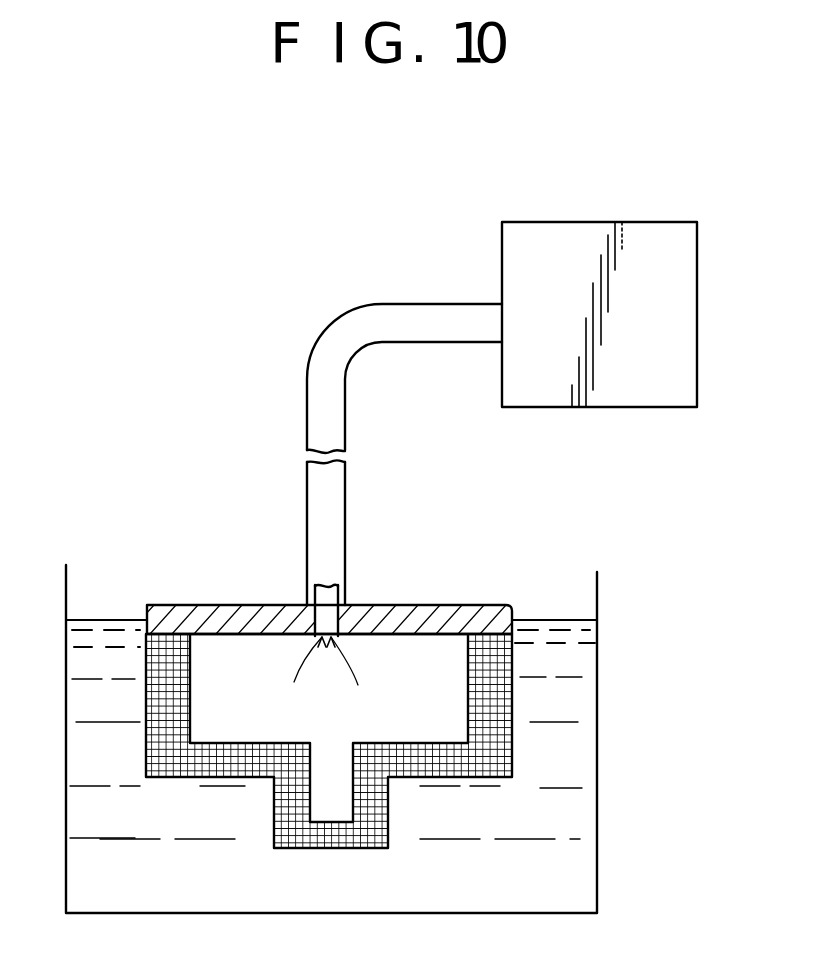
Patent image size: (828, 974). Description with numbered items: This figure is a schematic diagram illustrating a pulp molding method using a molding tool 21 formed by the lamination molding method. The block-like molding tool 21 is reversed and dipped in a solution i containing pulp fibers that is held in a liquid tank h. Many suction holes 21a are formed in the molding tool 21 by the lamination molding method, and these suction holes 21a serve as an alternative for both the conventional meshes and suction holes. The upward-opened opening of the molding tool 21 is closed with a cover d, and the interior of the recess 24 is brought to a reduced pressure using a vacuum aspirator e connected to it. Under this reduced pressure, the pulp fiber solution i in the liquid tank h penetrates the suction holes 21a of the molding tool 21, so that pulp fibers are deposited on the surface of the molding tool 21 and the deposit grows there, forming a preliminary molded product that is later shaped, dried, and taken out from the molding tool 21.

The recess 24 is at (418, 722).
The molding tool 21 is at (399, 770).
The suction holes 21a is at (202, 770).
The cover d is at (440, 612).
The vacuum aspirator e is at (580, 222).
The solution containing pulp fibers i is at (570, 743).
The liquid tank h is at (597, 835).